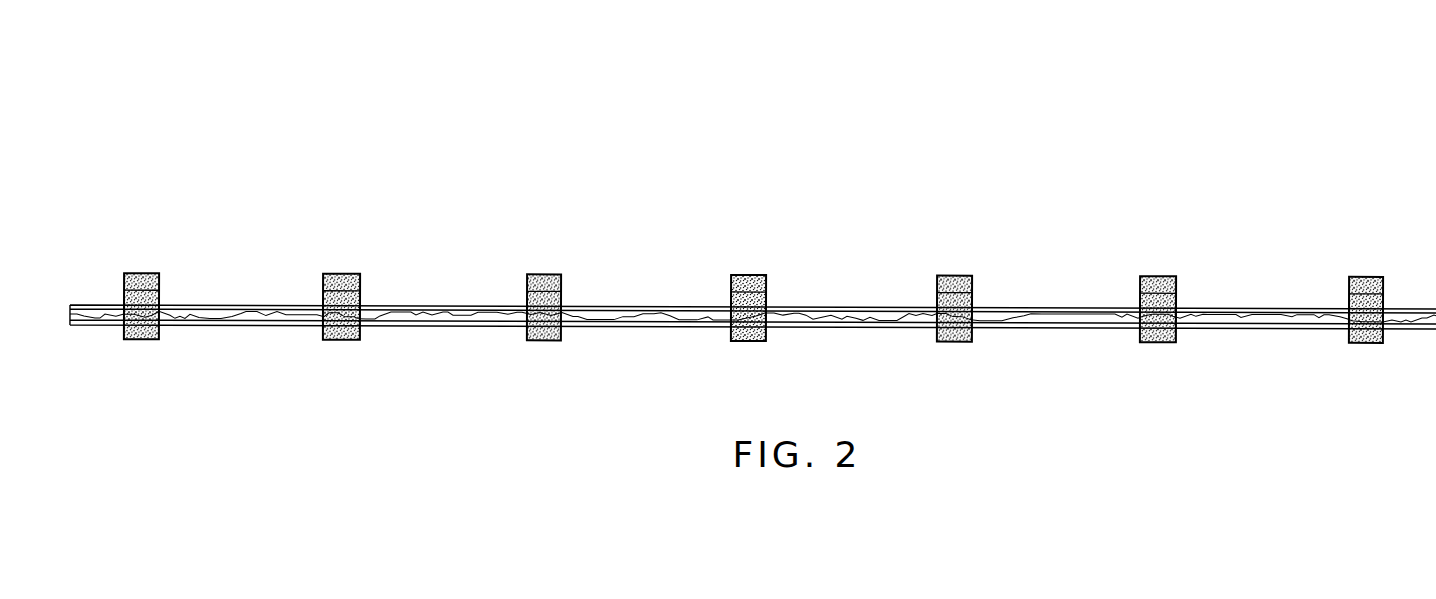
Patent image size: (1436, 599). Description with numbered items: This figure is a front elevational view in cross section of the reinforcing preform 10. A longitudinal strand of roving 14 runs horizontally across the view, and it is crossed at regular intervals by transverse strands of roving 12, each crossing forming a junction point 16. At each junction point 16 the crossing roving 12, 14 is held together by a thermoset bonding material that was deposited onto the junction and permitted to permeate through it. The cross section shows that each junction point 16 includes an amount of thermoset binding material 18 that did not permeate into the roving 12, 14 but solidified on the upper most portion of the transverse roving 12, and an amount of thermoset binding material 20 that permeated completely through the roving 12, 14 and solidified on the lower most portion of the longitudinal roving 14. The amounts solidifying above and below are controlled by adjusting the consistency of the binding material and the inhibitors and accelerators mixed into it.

The reinforcing preform 10 is at (449, 155).
The transverse roving 12 is at (157, 298).
The longitudinal roving 14 is at (428, 326).
The junction point 16 is at (166, 336).
The thermoset binding material 18 is at (136, 273).
The thermoset binding material 20 is at (340, 340).